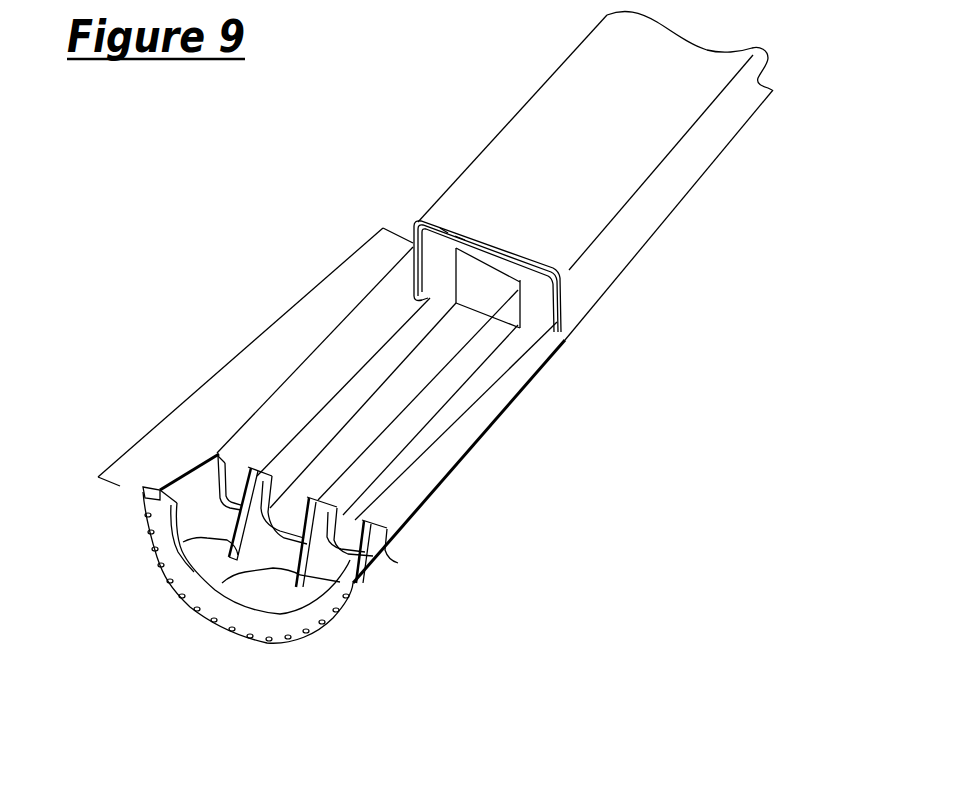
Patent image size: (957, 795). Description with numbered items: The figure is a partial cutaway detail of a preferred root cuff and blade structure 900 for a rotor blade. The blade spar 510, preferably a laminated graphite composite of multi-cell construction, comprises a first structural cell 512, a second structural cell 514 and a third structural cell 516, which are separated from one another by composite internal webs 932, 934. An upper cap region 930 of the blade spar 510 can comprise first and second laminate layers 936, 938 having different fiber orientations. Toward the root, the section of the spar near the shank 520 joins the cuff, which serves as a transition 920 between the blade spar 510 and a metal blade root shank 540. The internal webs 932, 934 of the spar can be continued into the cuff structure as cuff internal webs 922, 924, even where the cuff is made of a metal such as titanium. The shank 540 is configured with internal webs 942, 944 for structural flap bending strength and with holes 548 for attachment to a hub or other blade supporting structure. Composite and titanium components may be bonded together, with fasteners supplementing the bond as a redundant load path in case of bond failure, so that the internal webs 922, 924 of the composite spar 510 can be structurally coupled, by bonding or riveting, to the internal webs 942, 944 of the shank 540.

The root cuff and blade structure 900 is at (163, 220).
The blade spar 510 is at (705, 172).
The first structural cell 512 is at (433, 265).
The second structural cell 514 is at (502, 277).
The third structural cell 516 is at (545, 306).
The section of the spar near the shank 520 is at (557, 320).
The shank 540 is at (340, 640).
The holes 548 is at (342, 612).
The transition 920 is at (263, 321).
The cuff internal web 922 is at (356, 413).
The cuff internal web 924 is at (420, 435).
The upper cap region 930 is at (442, 240).
The composite internal web 932 is at (480, 283).
The composite internal web 934 is at (556, 325).
The first laminate layer 936 is at (455, 203).
The second laminate layer 938 is at (462, 225).
The internal web 942 is at (183, 542).
The internal web 944 is at (222, 583).